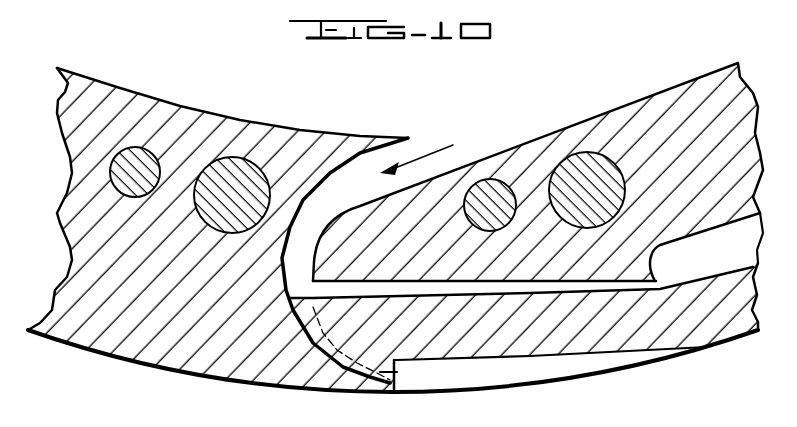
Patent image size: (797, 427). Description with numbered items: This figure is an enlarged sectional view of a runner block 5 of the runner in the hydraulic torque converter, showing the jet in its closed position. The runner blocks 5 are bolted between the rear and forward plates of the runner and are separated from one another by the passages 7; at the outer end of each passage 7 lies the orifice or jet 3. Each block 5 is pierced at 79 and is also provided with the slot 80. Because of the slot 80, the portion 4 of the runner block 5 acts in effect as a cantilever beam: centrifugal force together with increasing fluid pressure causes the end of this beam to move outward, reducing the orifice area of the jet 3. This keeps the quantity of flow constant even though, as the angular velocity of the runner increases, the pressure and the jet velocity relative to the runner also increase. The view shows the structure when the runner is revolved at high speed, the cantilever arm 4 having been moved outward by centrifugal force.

The jet 3 is at (402, 372).
The cantilever arm 4 is at (499, 343).
The runner block 5 is at (240, 364).
The passage 7 is at (359, 191).
The pierced hole 79 is at (736, 257).
The slot 80 is at (553, 285).